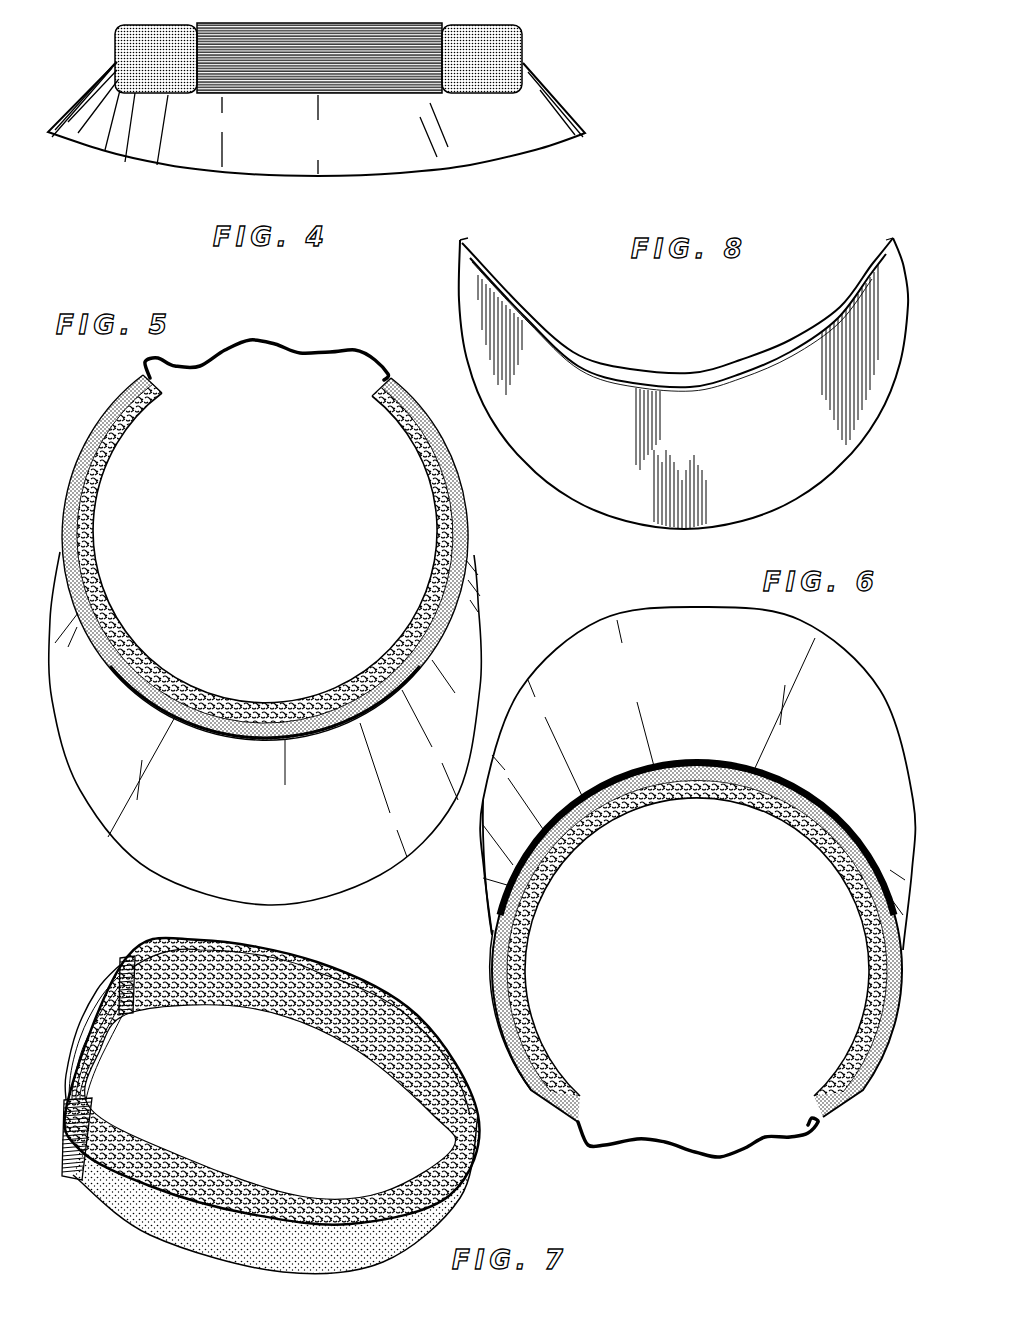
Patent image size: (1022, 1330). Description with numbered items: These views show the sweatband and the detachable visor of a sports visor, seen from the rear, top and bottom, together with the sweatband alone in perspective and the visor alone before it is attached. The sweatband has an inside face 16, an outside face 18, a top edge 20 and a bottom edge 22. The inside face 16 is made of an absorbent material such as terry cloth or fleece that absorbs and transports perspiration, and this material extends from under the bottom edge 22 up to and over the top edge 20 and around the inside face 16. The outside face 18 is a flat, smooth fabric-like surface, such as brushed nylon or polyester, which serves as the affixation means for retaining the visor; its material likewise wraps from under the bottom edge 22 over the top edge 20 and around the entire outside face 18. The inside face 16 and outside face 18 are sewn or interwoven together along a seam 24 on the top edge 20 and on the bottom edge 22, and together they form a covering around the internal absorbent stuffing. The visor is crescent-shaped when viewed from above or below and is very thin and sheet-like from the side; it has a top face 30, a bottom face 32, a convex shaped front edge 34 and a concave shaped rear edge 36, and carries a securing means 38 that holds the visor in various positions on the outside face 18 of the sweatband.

In FIG. 6, the inside face 16 is at (540, 1075).
In FIG. 7, the inside face 16 is at (257, 1017).
In FIG. 6, the outside face 18 is at (543, 1107).
In FIG. 7, the outside face 18 is at (160, 1220).
In FIG. 7, the top edge 20 is at (240, 943).
In FIG. 6, the bottom edge 22 is at (500, 1015).
In FIG. 5, the seam 24 is at (417, 413).
In FIG. 6, the seam 24 is at (607, 818).
In FIG. 7, the seam 24 is at (350, 973).
In FIG. 8, the top face 30 is at (788, 492).
In FIG. 4, the bottom face 32 is at (519, 150).
In FIG. 6, the bottom face 32 is at (840, 672).
In FIG. 8, the convex shaped front edge 34 is at (625, 527).
In FIG. 6, the convex shaped front edge 34 is at (553, 655).
In FIG. 8, the concave shaped rear edge 36 is at (645, 368).
In FIG. 6, the securing means 38 is at (690, 767).